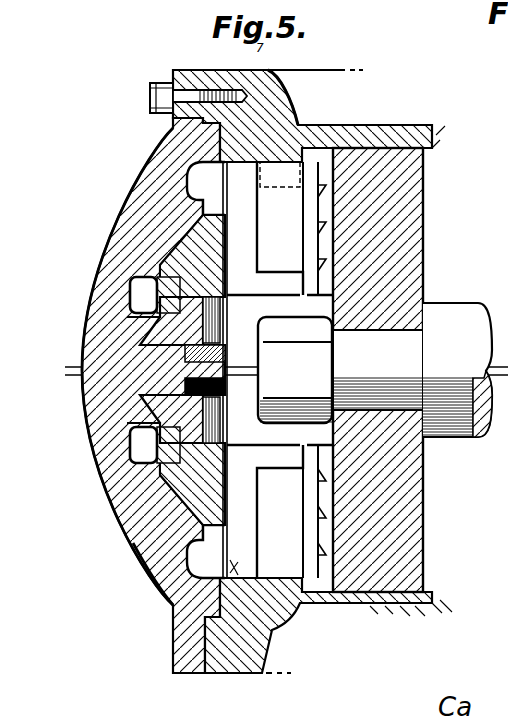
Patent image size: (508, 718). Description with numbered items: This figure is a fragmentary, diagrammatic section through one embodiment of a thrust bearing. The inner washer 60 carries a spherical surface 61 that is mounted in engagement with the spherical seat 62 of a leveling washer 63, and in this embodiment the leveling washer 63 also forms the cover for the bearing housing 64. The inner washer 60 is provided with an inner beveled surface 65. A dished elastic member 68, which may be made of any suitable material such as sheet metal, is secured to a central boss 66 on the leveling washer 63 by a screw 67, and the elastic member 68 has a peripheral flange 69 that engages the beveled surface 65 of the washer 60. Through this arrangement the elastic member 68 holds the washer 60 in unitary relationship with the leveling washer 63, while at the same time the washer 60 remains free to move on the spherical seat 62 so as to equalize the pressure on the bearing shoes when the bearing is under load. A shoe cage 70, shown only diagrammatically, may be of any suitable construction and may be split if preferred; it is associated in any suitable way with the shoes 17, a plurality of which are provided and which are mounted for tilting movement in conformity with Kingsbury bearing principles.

The shoe 17 is at (273, 557).
The inner washer 60 is at (188, 498).
The spherical surface 61 is at (155, 582).
The spherical seat 62 is at (162, 485).
The leveling washer 63 is at (100, 423).
The bearing housing 64 is at (288, 127).
The inner beveled surface 65 is at (195, 285).
The central boss 66 is at (177, 338).
The screw 67 is at (180, 380).
The dished elastic member 68 is at (200, 432).
The peripheral flange 69 is at (130, 287).
The shoe cage 70 is at (173, 627).